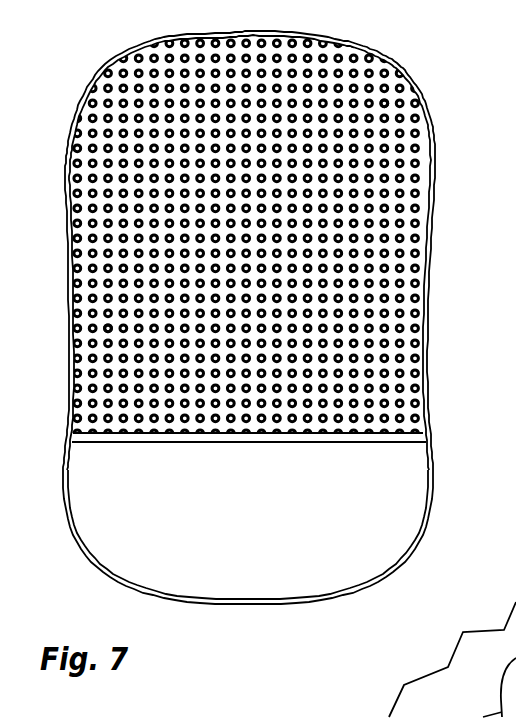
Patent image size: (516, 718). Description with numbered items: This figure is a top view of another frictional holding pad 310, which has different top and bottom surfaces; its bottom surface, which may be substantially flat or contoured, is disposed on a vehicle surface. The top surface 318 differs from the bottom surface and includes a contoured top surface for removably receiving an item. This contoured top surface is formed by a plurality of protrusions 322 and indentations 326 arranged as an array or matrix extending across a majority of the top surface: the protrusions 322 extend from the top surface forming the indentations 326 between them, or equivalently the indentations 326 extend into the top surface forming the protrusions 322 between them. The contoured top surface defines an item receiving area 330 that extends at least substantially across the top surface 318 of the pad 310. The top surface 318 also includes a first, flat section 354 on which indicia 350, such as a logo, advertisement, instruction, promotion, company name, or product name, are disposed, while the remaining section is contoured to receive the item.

The frictional holding pad 310 is at (280, 618).
The top surface 318 is at (145, 76).
The protrusions 322 is at (405, 120).
The indentations 326 is at (387, 98).
The item receiving area 330 is at (100, 328).
The indicia 350 is at (323, 515).
The flat section 354 is at (373, 542).